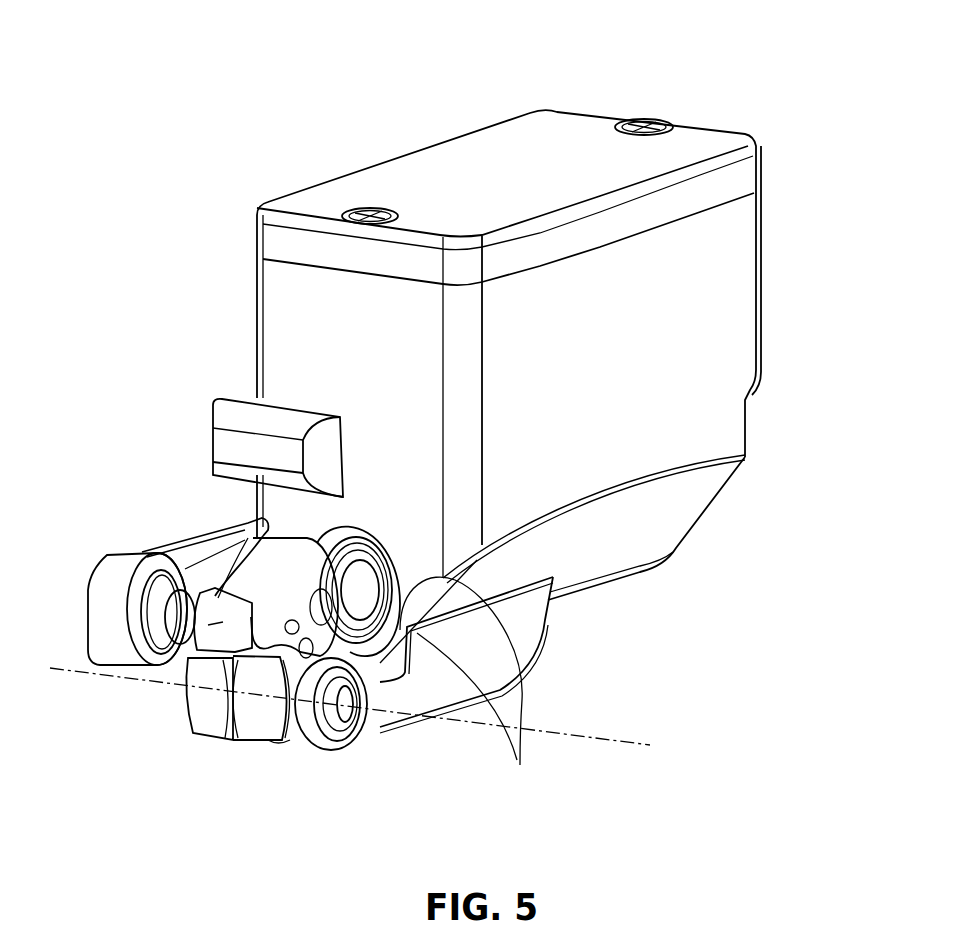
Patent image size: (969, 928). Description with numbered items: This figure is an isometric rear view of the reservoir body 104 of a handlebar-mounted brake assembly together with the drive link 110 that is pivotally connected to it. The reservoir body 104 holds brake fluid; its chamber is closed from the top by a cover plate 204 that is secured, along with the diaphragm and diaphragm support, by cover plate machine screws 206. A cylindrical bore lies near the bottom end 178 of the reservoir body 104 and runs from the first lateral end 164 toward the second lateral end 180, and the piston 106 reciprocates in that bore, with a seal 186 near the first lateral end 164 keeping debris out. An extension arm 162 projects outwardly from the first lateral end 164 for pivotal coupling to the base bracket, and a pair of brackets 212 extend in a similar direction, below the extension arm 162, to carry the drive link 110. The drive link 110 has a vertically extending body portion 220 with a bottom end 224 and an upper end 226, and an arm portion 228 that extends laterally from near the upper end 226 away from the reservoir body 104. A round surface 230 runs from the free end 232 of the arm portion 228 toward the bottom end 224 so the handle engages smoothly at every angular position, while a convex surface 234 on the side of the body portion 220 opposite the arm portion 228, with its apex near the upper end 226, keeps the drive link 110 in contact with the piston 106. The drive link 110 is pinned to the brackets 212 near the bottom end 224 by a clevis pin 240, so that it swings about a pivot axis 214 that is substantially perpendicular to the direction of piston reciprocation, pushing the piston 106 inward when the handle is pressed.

The reservoir body 104 is at (698, 362).
The piston 106 is at (378, 625).
The drive link 110 is at (252, 700).
The extension arm 162 is at (167, 540).
The first lateral end 164 is at (287, 302).
The bottom end 178 is at (618, 582).
The second lateral end 180 is at (759, 238).
The seal 186 is at (473, 685).
The cover plate 204 is at (740, 170).
The cover plate machine screw 206 is at (640, 119).
The pair of brackets 212 is at (205, 673).
The pivot axis 214 is at (573, 738).
The body portion 220 is at (242, 743).
The first longitudinal end 224 is at (280, 745).
The second longitudinal end 226 is at (245, 524).
The arm portion 228 is at (370, 688).
The round surface 230 is at (258, 686).
The free end 232 is at (182, 665).
The convex surface 234 is at (400, 580).
The clevis pin 240 is at (350, 722).